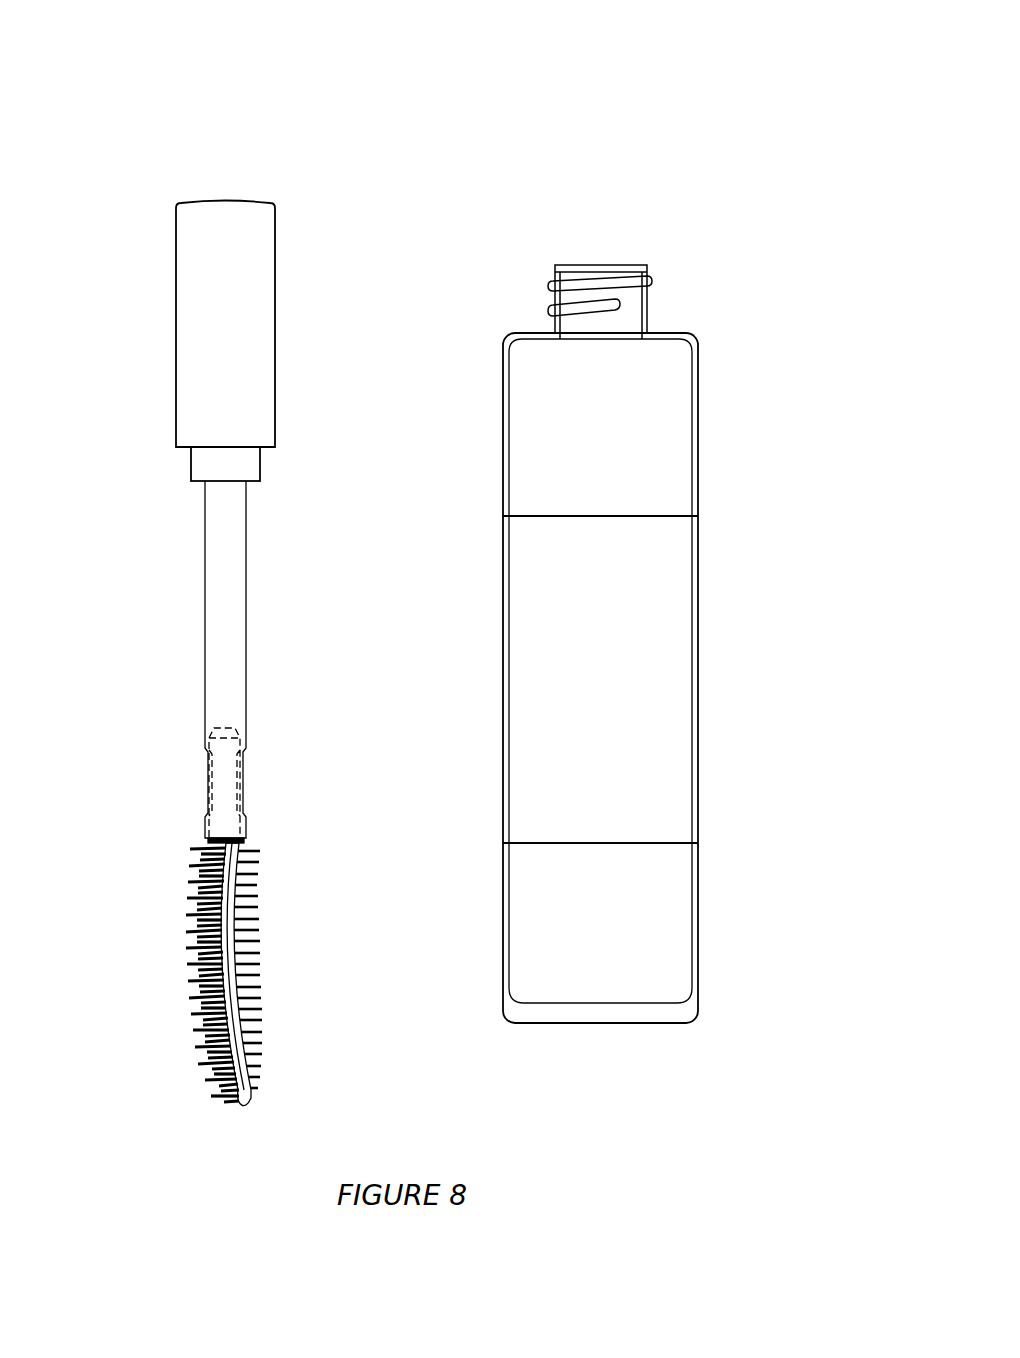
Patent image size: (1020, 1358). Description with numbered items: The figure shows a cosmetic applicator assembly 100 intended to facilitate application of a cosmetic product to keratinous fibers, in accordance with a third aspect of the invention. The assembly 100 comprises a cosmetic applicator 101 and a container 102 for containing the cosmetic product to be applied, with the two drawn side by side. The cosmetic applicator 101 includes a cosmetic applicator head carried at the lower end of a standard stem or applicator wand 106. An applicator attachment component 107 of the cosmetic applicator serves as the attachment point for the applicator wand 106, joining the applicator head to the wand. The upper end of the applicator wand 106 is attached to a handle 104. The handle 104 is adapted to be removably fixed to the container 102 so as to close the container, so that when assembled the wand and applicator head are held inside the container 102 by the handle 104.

The cosmetic applicator assembly 100 is at (545, 133).
The applicator 101 is at (182, 573).
The container 102 is at (700, 606).
The handle 104 is at (277, 373).
The applicator wand 106 is at (225, 583).
The applicator attachment component 107 is at (242, 772).